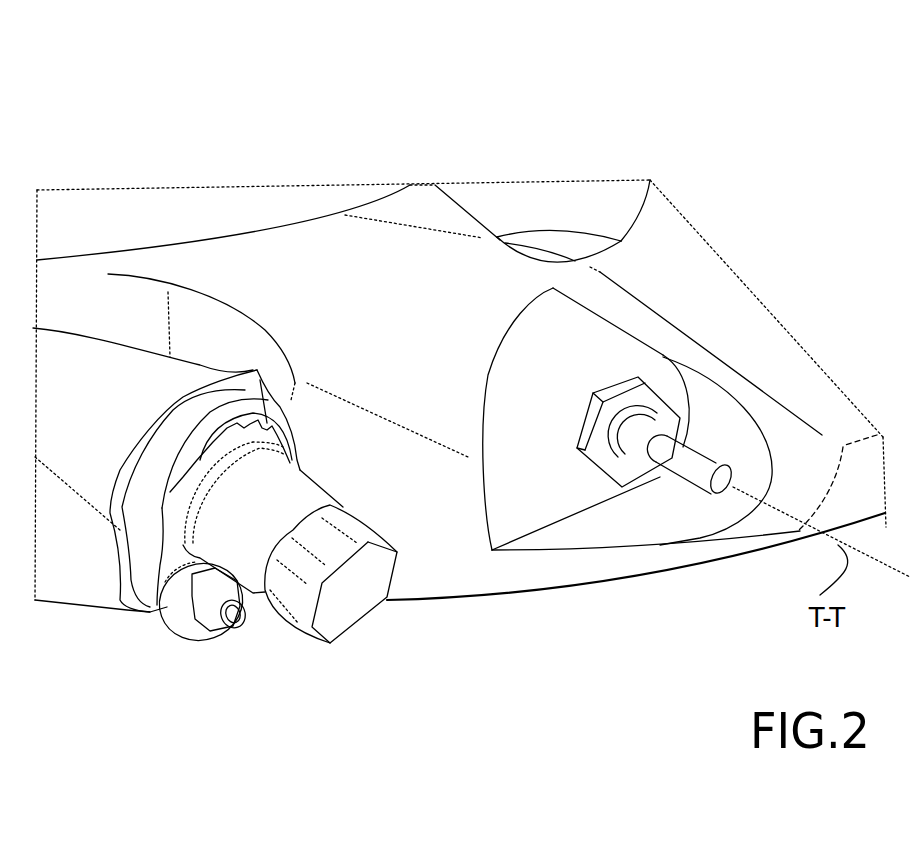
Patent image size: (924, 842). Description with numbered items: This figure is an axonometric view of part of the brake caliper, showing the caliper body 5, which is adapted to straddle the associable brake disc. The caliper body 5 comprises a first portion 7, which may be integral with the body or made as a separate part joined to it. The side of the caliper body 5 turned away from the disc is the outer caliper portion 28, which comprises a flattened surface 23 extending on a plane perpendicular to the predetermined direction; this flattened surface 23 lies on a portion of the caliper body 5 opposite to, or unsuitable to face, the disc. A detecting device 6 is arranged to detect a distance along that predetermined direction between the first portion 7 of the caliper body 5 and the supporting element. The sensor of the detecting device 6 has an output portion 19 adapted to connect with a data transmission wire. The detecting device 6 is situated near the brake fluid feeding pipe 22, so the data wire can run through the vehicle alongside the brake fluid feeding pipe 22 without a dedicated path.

The caliper body 5 is at (755, 333).
The outer caliper portion 28 is at (323, 245).
The first portion 7 is at (542, 250).
The flattened surface 23 is at (555, 490).
The detecting device 6 is at (648, 463).
The output portion 19 is at (688, 472).
The brake fluid feeding pipe 22 is at (254, 563).